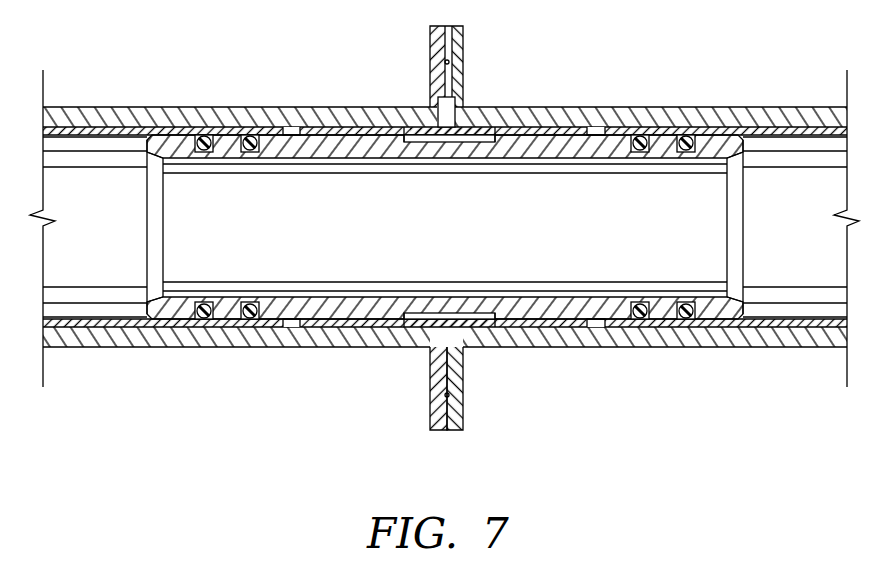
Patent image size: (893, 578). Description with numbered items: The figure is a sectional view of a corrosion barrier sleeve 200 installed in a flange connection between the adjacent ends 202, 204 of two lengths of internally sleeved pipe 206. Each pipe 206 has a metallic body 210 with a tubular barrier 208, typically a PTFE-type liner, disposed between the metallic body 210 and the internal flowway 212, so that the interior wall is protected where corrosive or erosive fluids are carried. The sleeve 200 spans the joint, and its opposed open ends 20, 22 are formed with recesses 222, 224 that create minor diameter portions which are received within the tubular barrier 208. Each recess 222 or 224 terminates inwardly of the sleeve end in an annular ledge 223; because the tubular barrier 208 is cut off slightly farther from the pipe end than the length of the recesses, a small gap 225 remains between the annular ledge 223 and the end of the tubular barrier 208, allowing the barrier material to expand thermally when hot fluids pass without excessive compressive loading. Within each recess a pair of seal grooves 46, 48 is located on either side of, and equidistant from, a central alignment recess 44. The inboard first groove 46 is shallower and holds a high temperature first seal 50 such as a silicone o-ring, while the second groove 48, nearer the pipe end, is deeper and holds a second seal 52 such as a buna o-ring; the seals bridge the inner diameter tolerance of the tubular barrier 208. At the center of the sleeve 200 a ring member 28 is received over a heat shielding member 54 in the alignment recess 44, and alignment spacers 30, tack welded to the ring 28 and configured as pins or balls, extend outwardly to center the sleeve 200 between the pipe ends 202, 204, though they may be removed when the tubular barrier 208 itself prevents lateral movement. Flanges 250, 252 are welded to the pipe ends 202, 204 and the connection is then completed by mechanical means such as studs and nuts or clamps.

The opposed open end of the sleeve 20 is at (147, 185).
The opposed open end of the sleeve 22 is at (743, 185).
The ring member 28 is at (479, 127).
The alignment spacer 30 is at (441, 97).
The alignment recess 44 is at (432, 145).
The first seal groove 46 is at (251, 297).
The second seal groove 48 is at (204, 297).
The first seal 50 is at (251, 320).
The second seal 52 is at (204, 320).
The heat shielding member 54 is at (472, 145).
The sleeve 200 is at (472, 248).
The pipe end 202 is at (377, 116).
The pipe end 204 is at (551, 112).
The internally sleeved pipe 206 is at (373, 348).
The tubular barrier 208 is at (113, 347).
The metallic body 210 is at (373, 159).
The internal flowway 212 is at (122, 248).
The recess 222 is at (176, 127).
The annular ledge 223 is at (297, 329).
The recess 224 is at (710, 127).
The gap 225 is at (293, 127).
The flange 250 is at (430, 411).
The flange 252 is at (463, 411).